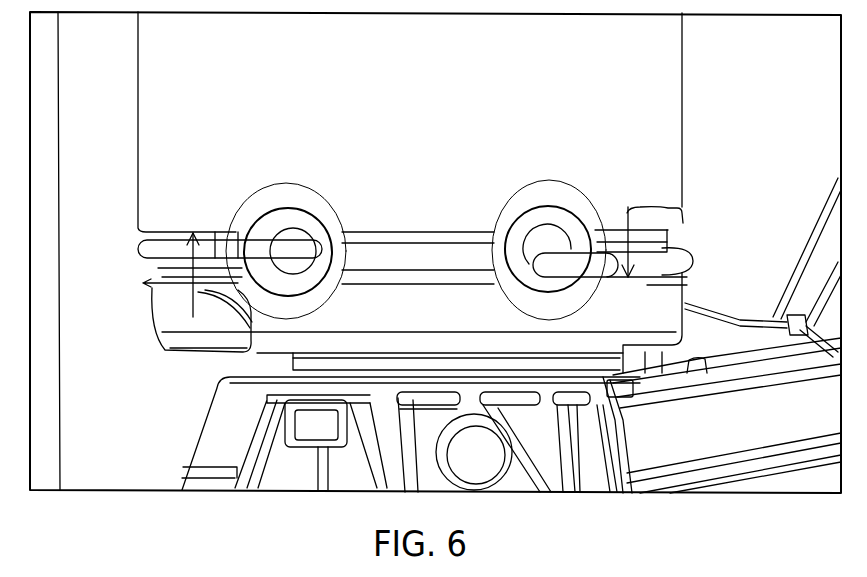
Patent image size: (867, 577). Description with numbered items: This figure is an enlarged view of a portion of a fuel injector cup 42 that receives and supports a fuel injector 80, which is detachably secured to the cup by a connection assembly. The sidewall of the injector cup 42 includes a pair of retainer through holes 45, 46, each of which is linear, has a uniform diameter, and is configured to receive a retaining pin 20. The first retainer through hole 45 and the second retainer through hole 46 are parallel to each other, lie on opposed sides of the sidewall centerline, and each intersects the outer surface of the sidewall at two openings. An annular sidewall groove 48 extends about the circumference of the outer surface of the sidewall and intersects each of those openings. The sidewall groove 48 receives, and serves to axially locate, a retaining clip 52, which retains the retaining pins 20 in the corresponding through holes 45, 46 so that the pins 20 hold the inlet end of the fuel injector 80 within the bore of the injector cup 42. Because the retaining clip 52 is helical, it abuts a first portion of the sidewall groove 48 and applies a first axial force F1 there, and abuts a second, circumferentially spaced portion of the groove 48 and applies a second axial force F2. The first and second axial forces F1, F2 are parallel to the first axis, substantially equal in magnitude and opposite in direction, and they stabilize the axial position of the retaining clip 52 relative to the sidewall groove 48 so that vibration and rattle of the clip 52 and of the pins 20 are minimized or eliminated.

The injector cup 42 is at (438, 89).
The retaining pin 20 is at (272, 230).
The second retainer through hole 46 is at (310, 232).
The first retainer through hole 45 is at (577, 220).
The sidewall groove 48 is at (411, 240).
The retaining clip 52 is at (677, 253).
The fuel injector 80 is at (215, 412).
The first axial force F1 is at (177, 276).
The second axial force F2 is at (680, 209).